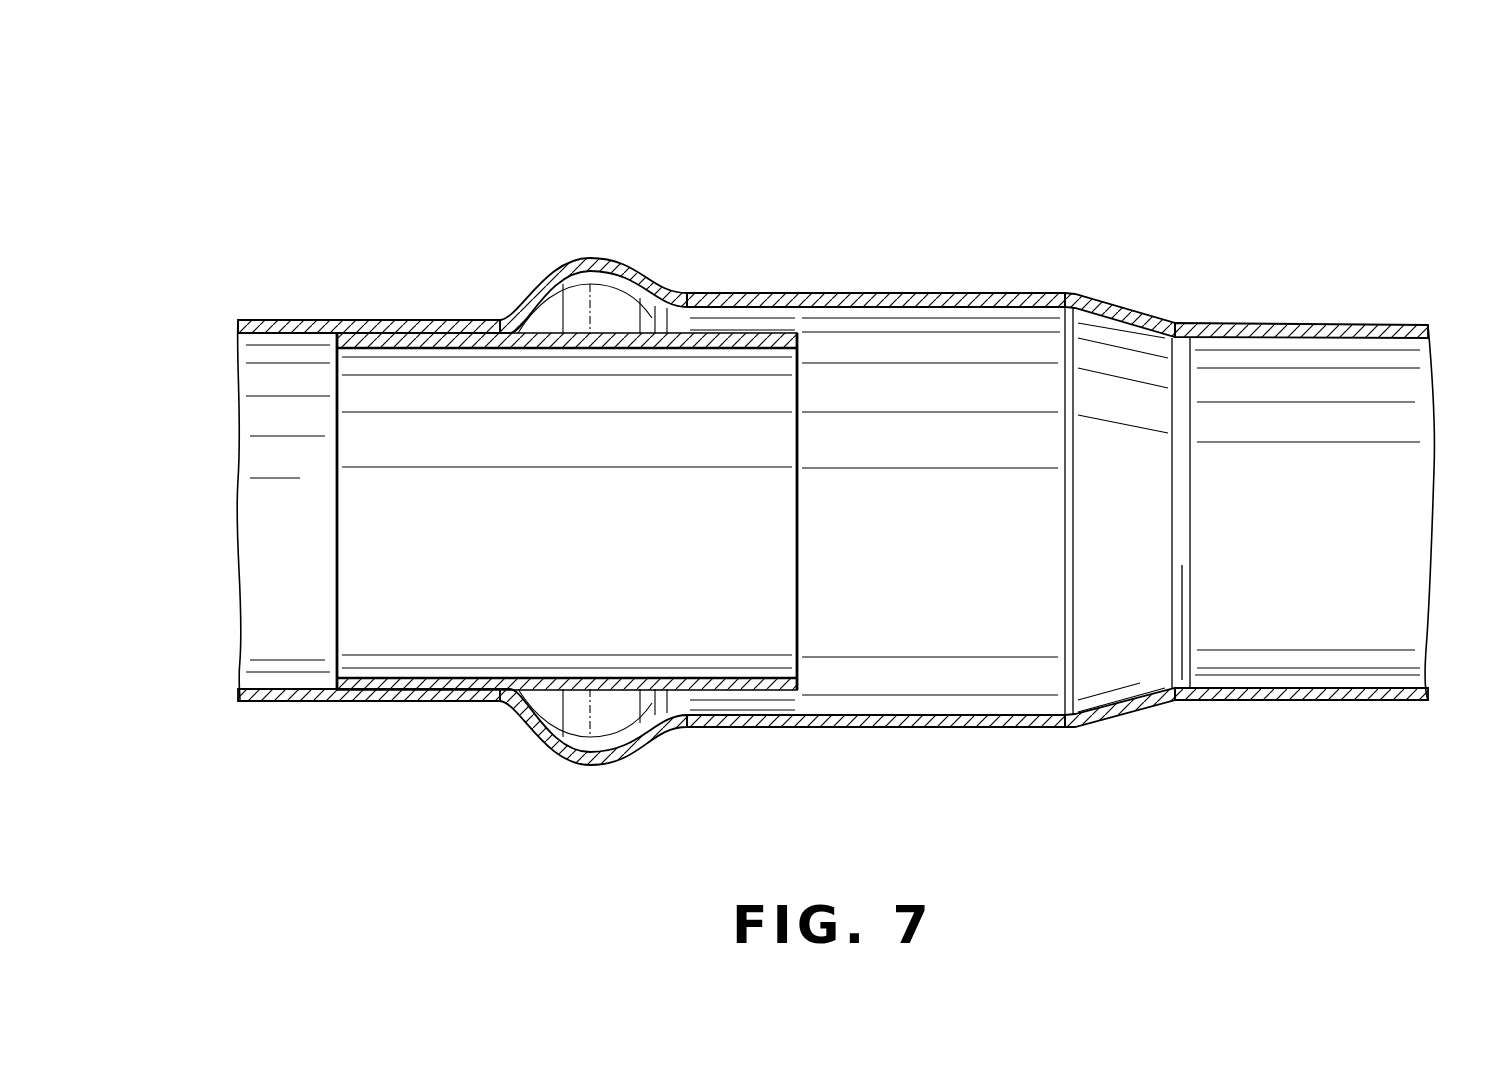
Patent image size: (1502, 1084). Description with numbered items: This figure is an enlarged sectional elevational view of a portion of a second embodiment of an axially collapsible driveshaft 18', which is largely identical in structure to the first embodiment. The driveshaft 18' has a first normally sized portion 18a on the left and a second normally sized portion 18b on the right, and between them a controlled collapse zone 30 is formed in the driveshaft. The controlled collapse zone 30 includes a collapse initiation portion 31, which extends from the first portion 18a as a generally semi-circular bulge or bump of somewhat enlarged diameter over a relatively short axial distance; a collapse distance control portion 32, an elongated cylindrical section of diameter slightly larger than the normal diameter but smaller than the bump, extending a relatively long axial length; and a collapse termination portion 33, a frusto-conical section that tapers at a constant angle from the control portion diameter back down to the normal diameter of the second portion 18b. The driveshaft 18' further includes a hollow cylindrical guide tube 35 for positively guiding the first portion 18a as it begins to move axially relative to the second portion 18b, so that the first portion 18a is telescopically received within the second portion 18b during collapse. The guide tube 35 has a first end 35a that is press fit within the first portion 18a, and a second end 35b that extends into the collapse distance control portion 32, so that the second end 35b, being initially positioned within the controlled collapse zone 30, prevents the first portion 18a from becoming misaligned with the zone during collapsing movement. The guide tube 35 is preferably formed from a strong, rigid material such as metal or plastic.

The axially collapsible driveshaft 18' is at (816, 483).
The first normally sized portion 18a is at (293, 320).
The second normally sized portion 18b is at (1383, 331).
The controlled collapse zone 30 is at (1185, 785).
The collapse initiation portion 31 is at (653, 195).
The collapse distance control portion 32 is at (1057, 195).
The collapse termination portion 33 is at (1180, 195).
The guide tube 35 is at (820, 550).
The first end of guide tube 35a is at (381, 334).
The second end of guide tube 35b is at (753, 337).